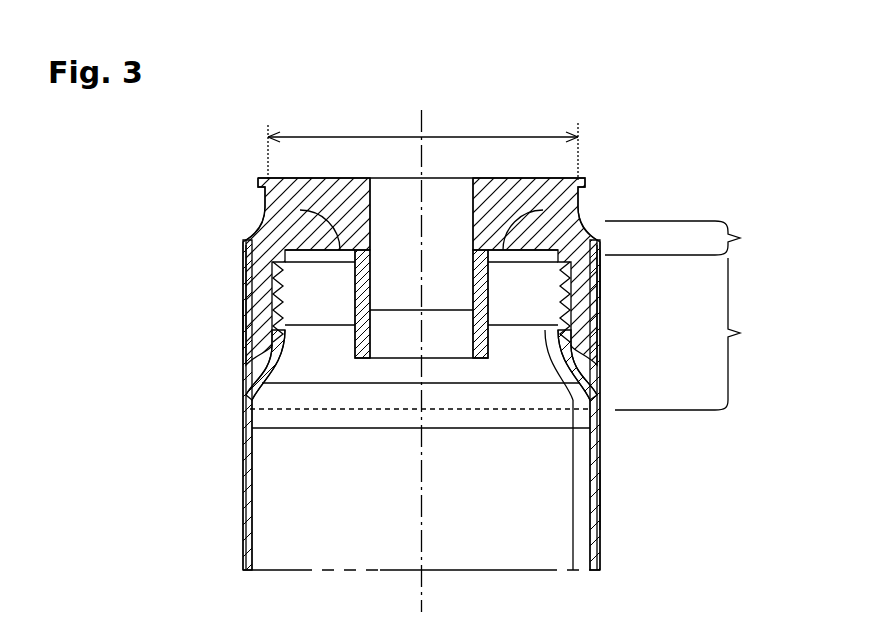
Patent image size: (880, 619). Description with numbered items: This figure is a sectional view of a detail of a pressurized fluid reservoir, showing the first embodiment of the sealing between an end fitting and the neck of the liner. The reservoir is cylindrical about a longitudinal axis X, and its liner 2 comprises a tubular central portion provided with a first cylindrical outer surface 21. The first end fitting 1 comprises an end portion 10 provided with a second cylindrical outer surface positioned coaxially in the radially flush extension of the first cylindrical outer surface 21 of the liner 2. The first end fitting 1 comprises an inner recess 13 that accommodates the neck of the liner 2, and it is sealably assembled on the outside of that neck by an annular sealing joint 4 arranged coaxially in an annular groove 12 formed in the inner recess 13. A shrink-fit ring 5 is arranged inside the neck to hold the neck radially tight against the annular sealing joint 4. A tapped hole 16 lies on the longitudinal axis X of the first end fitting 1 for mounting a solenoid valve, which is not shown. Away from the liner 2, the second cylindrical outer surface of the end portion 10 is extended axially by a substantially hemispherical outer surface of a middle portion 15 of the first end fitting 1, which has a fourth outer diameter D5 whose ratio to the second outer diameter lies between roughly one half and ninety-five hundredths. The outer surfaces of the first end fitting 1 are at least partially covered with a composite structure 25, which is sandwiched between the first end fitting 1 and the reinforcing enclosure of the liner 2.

The first end fitting 1 is at (556, 182).
The liner 2 is at (298, 482).
The annular sealing joint 4 is at (600, 275).
The shrink-fit ring 5 is at (318, 280).
The end portion 10 is at (691, 334).
The annular groove 12 is at (272, 264).
The inner recess 13 is at (292, 209).
The middle portion 15 is at (686, 238).
The tapped hole 16 is at (399, 238).
The first cylindrical outer surface 21 is at (600, 497).
The composite structure 25 is at (243, 325).
The fourth outer diameter D5 is at (423, 148).
The longitudinal axis X is at (421, 124).